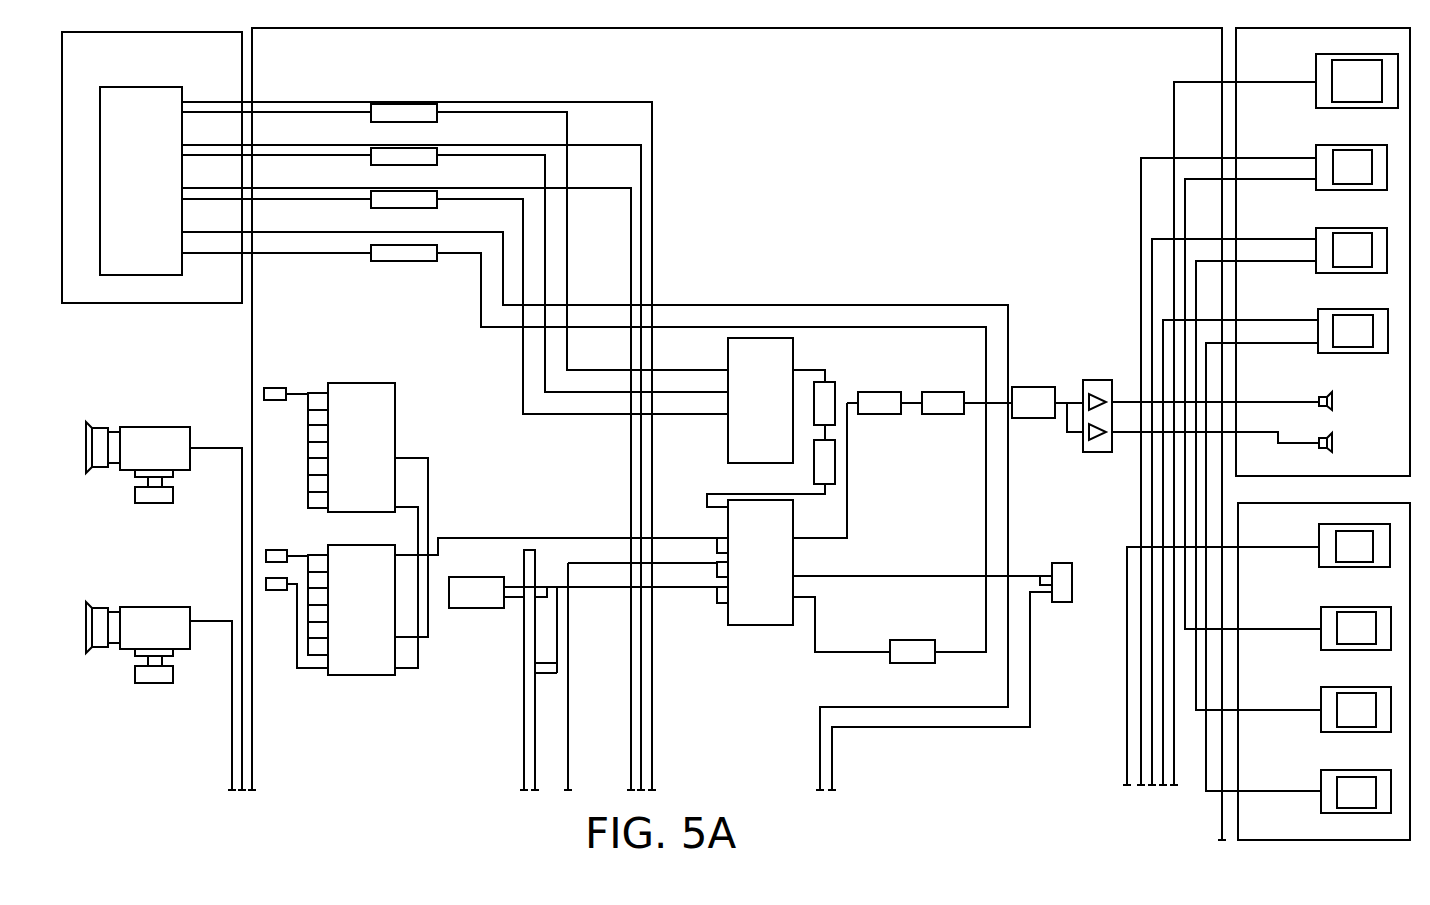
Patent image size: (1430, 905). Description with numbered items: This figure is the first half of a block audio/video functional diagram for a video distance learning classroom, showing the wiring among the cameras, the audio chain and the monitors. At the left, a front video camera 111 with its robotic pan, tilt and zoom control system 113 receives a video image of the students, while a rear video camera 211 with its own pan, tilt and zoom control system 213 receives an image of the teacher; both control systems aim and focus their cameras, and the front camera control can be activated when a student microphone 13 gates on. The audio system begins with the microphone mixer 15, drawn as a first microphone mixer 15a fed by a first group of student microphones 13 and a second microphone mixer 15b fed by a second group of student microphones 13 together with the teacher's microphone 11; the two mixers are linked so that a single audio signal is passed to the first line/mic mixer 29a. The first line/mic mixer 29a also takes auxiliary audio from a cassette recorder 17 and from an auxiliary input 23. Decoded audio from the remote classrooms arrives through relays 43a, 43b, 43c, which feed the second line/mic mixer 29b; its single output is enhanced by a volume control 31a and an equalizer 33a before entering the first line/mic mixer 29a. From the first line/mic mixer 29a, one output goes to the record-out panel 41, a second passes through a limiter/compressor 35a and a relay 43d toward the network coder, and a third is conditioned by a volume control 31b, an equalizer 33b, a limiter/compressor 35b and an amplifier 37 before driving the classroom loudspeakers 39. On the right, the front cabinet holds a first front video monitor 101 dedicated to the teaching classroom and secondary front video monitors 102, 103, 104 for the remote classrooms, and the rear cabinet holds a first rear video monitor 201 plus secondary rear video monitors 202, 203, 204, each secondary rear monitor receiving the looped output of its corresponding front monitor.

The microphone mixer 15 is at (127, 86).
The relay 43a is at (416, 108).
The relay 43b is at (432, 160).
The relay 43c is at (432, 199).
The relay 43d is at (388, 262).
The front video camera 111 is at (158, 426).
The front camera pan, tilt and zoom control system 113 is at (135, 490).
The rear video camera 211 is at (160, 606).
The rear camera pan, tilt and zoom control system 213 is at (135, 669).
The student microphone 13 is at (270, 401).
The teacher's microphone 11 is at (280, 591).
The first microphone mixer 15a is at (383, 402).
The second microphone mixer 15b is at (372, 670).
The cassette recorder 17 is at (493, 604).
The auxiliary input 23 is at (531, 552).
The first line/mic mixer 29a is at (733, 608).
The second line/mic mixer 29b is at (733, 424).
The volume control 31a is at (828, 387).
The volume control 31b is at (880, 398).
The equalizer 33a is at (829, 485).
The equalizer 33b is at (930, 398).
The limiter/compressor 35a is at (900, 647).
The limiter/compressor 35b is at (1032, 392).
The amplifier 37 is at (1090, 385).
The loudspeakers 39 is at (1333, 400).
The record-out panel 41 is at (1063, 570).
The first front video monitor 101 is at (1392, 104).
The secondary front video monitor 102 is at (1382, 188).
The secondary front video monitor 103 is at (1382, 271).
The secondary front video monitor 104 is at (1382, 351).
The first rear video monitor 201 is at (1385, 565).
The secondary rear video monitor 202 is at (1385, 648).
The secondary rear video monitor 203 is at (1385, 730).
The secondary rear video monitor 204 is at (1385, 811).